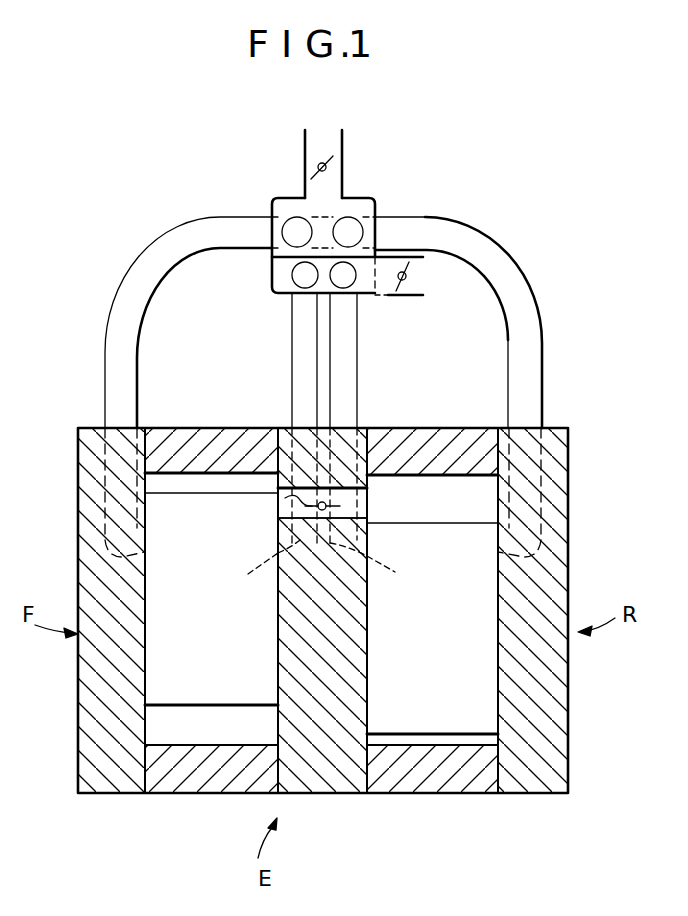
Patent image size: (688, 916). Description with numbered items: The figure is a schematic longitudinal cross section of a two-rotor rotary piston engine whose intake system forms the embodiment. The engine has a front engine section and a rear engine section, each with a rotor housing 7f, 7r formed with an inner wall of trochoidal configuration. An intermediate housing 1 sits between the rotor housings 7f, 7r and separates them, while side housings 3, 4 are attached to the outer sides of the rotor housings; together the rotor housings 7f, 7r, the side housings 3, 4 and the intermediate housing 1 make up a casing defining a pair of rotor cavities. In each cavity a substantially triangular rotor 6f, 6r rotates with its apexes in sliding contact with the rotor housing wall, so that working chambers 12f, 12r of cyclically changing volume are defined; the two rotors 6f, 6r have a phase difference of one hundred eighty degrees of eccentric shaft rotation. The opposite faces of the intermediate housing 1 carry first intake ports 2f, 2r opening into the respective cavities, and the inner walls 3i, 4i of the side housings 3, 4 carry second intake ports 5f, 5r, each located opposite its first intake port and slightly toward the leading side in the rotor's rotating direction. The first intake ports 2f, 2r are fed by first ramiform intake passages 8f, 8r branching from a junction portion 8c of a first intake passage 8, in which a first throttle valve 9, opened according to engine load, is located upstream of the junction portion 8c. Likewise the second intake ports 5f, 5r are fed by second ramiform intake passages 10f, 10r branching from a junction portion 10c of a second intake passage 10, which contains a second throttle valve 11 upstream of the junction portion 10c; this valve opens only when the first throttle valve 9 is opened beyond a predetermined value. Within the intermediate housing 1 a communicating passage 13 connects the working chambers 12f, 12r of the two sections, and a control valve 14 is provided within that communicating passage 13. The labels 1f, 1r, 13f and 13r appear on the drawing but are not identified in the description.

The intermediate housing 1 is at (334, 792).
The front piston 1f is at (278, 720).
The rear piston 1r is at (372, 739).
The first intake port 2f is at (249, 569).
The first intake port 2r is at (392, 570).
The side housing 3 is at (87, 731).
The inner wall 3i is at (160, 722).
The side housing 4 is at (555, 730).
The inner wall 4i is at (488, 740).
The second intake port 5f is at (148, 553).
The second intake port 5r is at (496, 552).
The rotor 6f is at (218, 650).
The rotor 6r is at (448, 650).
The rotor housing 7f is at (222, 794).
The rotor housing 7r is at (433, 794).
The first intake passage 8 is at (423, 297).
The junction portion 8c is at (272, 290).
The first ramiform intake passage 8f is at (292, 358).
The first ramiform intake passage 8r is at (357, 360).
The first throttle valve 9 is at (402, 282).
The second intake passage 10 is at (303, 141).
The junction portion 10c is at (352, 203).
The second ramiform intake passage 10f is at (117, 297).
The second ramiform intake passage 10r is at (515, 262).
The second throttle valve 11 is at (343, 143).
The working chamber 12f is at (171, 485).
The working chamber 12r is at (458, 485).
The communicating passage 13 is at (372, 508).
The front passage wall 13f is at (264, 492).
The rear passage wall 13r is at (376, 492).
The control valve 14 is at (287, 498).